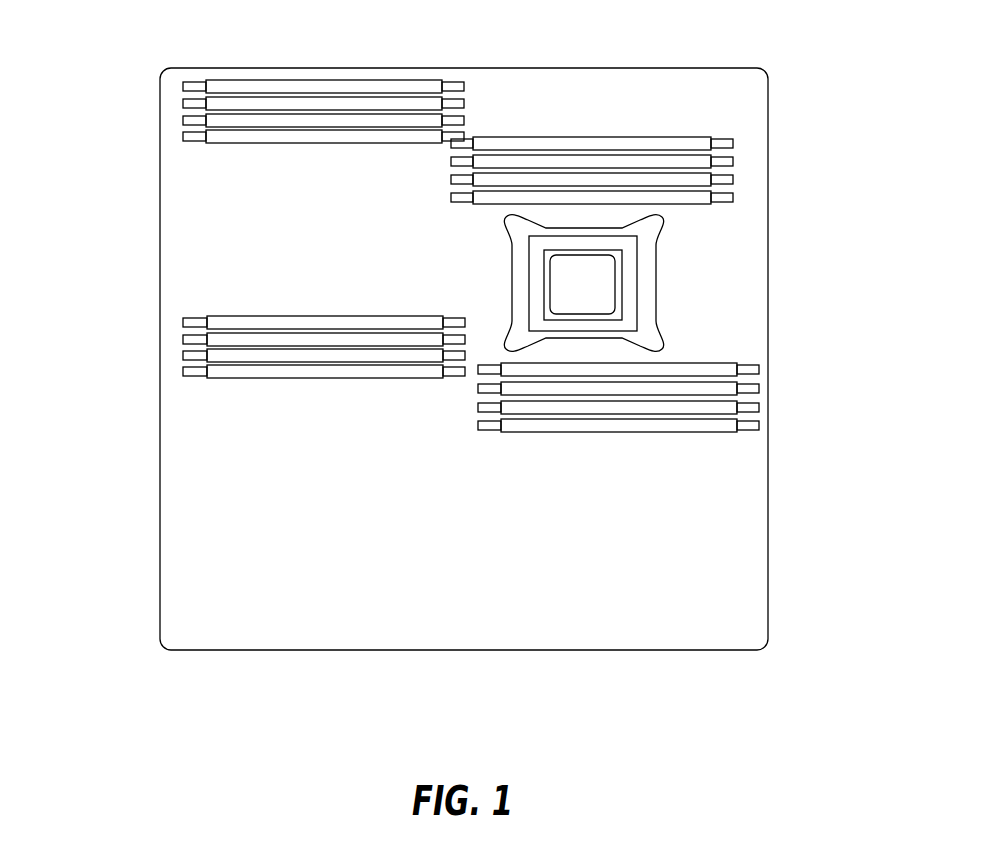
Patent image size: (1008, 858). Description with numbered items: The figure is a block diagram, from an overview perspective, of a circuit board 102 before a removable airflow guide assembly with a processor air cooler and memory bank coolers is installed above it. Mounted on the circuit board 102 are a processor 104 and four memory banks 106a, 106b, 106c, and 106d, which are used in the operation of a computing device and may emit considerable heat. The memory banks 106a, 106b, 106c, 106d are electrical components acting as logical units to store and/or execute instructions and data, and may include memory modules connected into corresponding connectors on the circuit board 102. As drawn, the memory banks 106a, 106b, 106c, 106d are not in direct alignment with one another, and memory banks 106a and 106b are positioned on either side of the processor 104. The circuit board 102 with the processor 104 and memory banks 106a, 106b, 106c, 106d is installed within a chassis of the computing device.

The circuit board 102 is at (713, 81).
The processor 104 is at (602, 288).
The memory bank 106a is at (690, 137).
The memory bank 106b is at (710, 360).
The memory bank 106c is at (225, 315).
The memory bank 106d is at (218, 143).